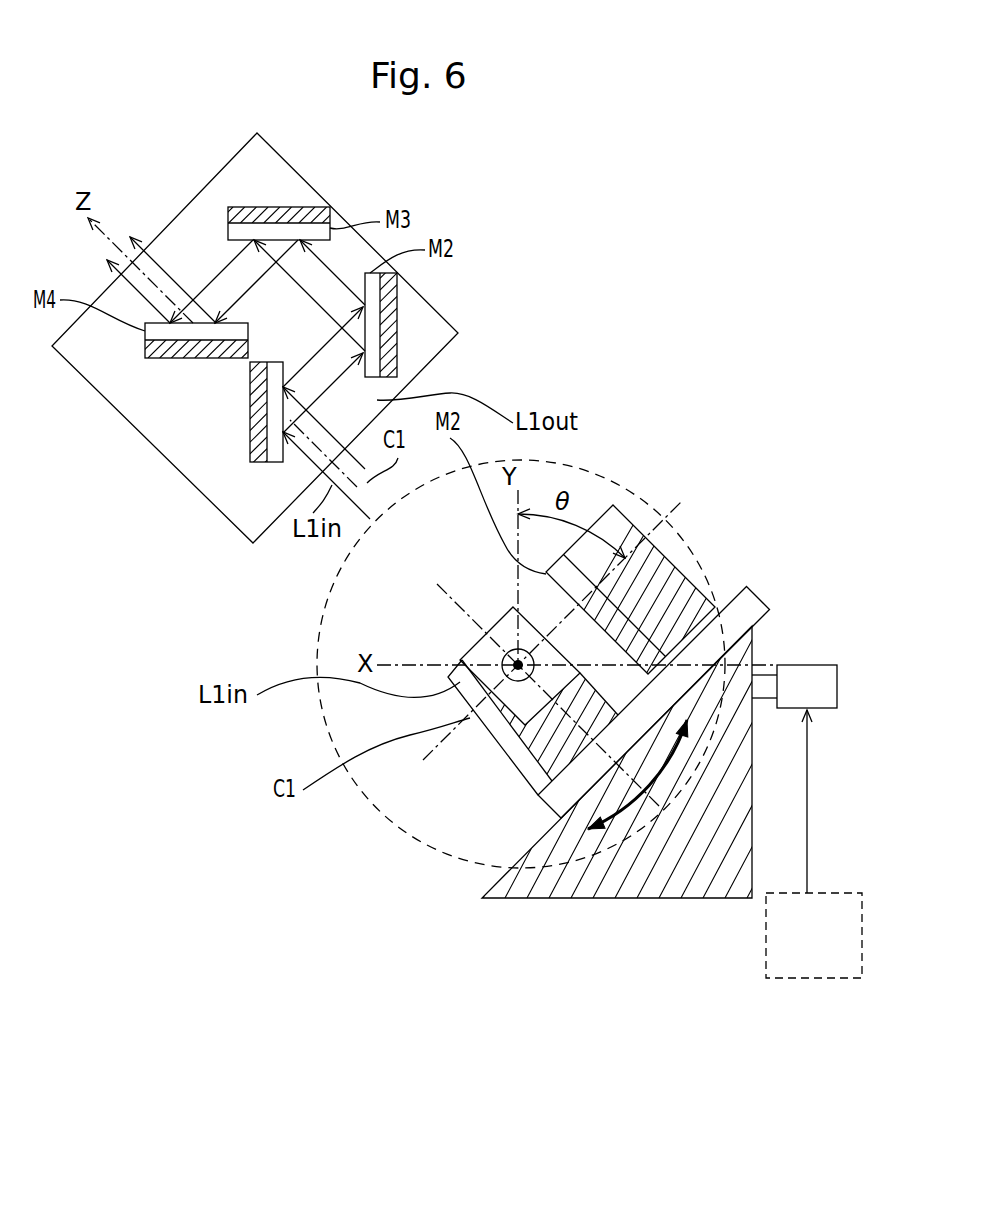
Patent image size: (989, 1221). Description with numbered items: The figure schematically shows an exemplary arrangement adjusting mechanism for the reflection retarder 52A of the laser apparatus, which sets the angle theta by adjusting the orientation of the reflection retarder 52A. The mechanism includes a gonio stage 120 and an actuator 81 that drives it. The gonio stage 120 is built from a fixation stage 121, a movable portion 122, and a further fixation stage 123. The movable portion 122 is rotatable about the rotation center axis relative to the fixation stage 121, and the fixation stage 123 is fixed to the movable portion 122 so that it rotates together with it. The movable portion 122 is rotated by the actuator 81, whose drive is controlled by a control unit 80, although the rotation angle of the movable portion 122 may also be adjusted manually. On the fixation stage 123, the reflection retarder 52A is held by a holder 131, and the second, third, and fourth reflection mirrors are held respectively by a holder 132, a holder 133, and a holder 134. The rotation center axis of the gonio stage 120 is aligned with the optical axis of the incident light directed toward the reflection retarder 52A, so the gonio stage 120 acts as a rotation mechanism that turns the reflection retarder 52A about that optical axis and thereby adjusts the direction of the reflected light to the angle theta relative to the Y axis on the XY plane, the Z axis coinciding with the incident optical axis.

The fixation stage 123 is at (435, 360).
The holder 133 is at (307, 207).
The holder 134 is at (145, 348).
The holder 132 is at (398, 298).
The holder 131 is at (250, 407).
The reflection retarder 52A is at (270, 467).
The gonio stage 120 is at (735, 793).
The fixation stage 121 is at (620, 898).
The movable portion 122 is at (555, 898).
The actuator 81 is at (807, 665).
The control unit 80 is at (812, 978).